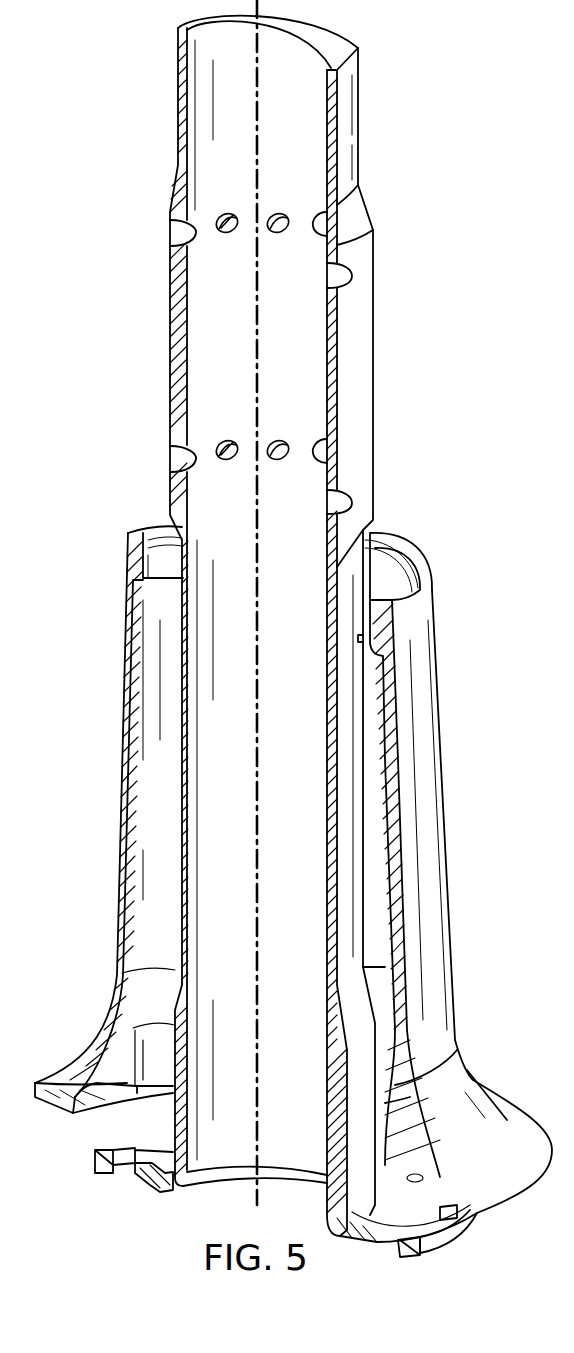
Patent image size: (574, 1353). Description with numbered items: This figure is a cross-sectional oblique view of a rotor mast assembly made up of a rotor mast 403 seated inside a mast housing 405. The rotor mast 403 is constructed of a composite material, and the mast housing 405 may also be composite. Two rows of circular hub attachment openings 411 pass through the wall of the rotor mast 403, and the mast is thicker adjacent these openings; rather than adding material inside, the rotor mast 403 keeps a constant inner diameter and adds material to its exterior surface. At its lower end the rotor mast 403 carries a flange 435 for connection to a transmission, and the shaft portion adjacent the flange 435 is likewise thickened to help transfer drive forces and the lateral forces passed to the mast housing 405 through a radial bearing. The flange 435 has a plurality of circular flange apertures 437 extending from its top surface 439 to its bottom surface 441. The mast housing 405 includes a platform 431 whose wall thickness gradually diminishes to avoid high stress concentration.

The rotor mast 403 is at (352, 140).
The mast housing 405 is at (437, 806).
The circular hub attachment openings 411 is at (235, 213).
The platform 431 is at (118, 1063).
The flange 435 is at (446, 1251).
The circular flange apertures 437 is at (392, 1250).
The top surface 439 is at (107, 1150).
The bottom surface 441 is at (152, 1189).